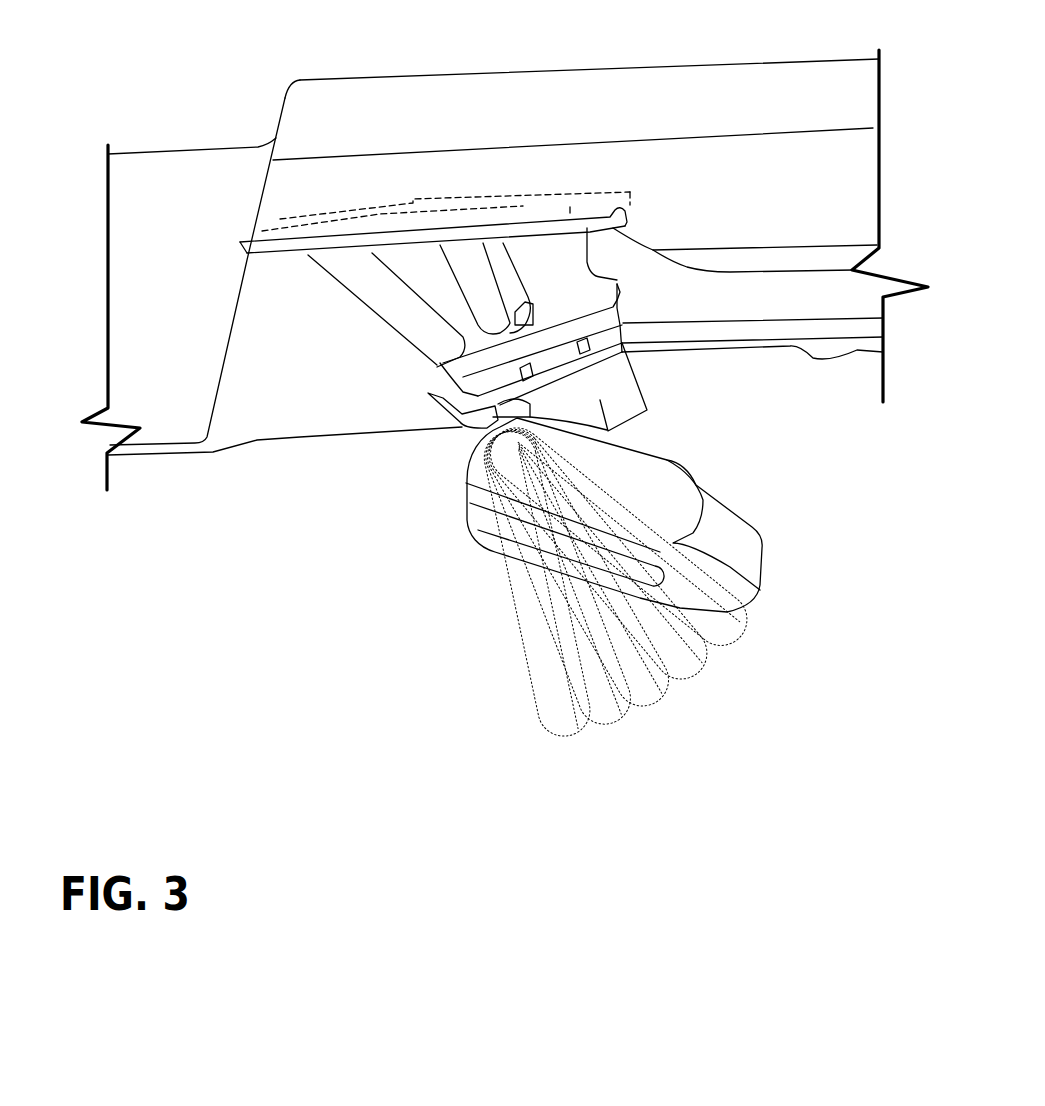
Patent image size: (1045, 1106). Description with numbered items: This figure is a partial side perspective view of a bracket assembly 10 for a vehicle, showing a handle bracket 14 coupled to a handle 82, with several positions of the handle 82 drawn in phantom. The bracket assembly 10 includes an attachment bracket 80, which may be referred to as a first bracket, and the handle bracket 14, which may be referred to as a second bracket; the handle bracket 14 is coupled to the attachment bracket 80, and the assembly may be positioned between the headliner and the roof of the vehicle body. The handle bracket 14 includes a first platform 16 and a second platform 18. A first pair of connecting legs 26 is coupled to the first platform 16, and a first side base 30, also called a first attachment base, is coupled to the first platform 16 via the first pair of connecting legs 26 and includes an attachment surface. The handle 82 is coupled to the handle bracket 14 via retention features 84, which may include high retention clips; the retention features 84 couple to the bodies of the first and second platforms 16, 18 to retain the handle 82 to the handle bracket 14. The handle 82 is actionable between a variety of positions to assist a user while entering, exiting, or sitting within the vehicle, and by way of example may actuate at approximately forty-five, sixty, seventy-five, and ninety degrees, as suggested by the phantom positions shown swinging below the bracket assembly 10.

The bracket assembly 10 is at (229, 187).
The handle bracket 14 is at (287, 250).
The first platform 16 is at (645, 290).
The second platform 18 is at (457, 423).
The first pair of connecting legs 26 is at (428, 270).
The first side base 30 is at (543, 235).
The attachment bracket 80 is at (450, 198).
The handle 82 is at (737, 543).
The retention features 84 is at (617, 389).